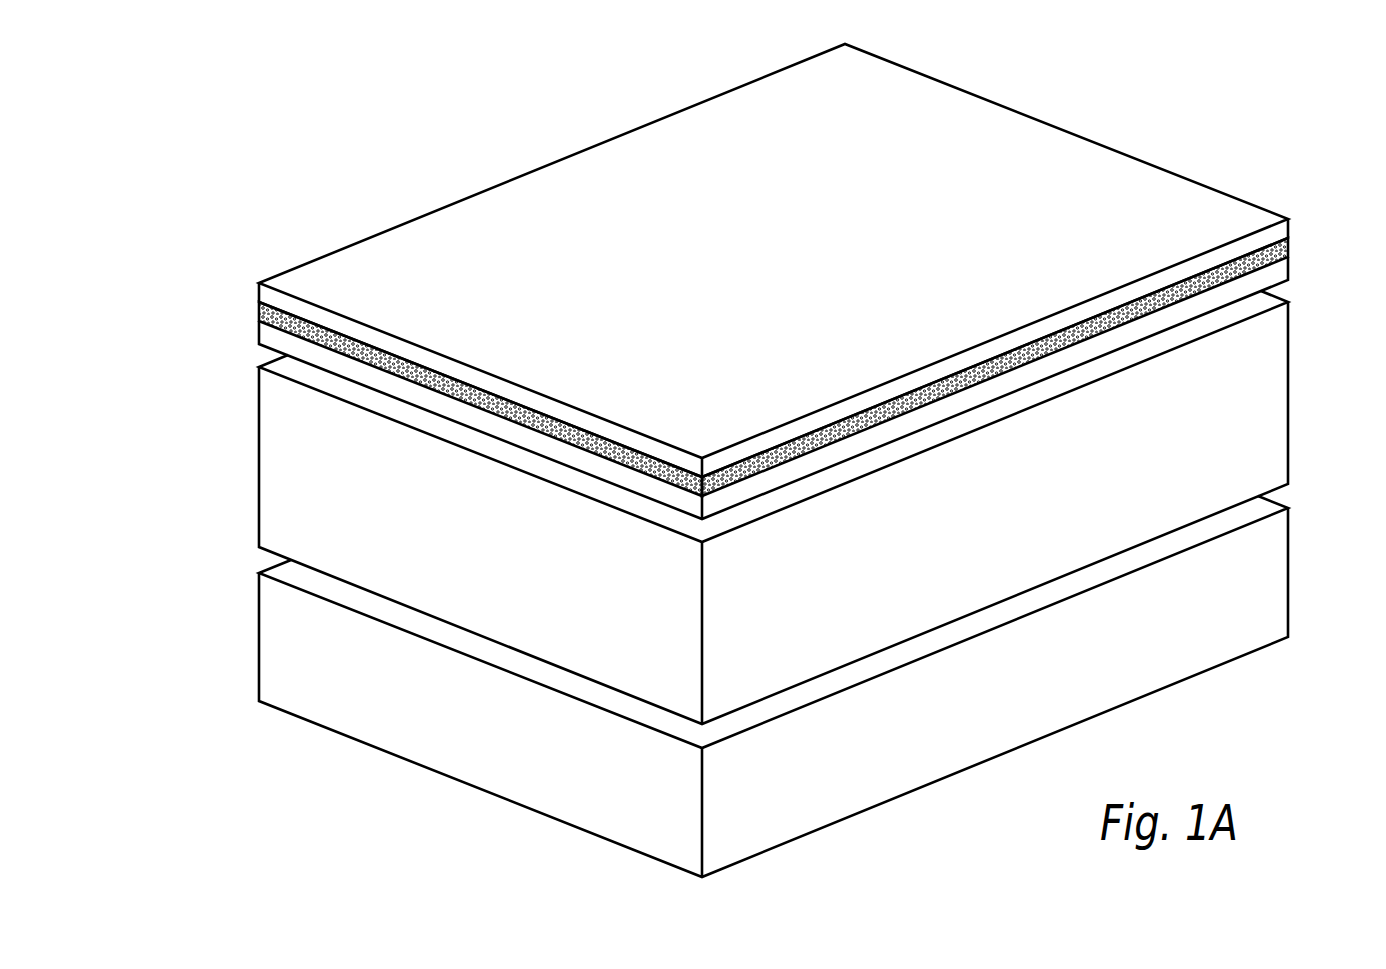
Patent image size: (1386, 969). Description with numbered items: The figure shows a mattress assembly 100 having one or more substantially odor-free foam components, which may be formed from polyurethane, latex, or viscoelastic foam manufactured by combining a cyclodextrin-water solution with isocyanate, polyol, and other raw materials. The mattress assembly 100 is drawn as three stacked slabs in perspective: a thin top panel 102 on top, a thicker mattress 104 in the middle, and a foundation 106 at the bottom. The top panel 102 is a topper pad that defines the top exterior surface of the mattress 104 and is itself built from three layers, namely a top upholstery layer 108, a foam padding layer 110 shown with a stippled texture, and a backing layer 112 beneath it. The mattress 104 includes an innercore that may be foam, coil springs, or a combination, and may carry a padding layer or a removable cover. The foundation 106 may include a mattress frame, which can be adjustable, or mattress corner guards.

The mattress assembly 100 is at (528, 113).
The top panel 102 is at (197, 257).
The mattress 104 is at (197, 340).
The foundation 106 is at (197, 673).
The top upholstery layer 108 is at (417, 238).
The foam padding layer 110 is at (1233, 260).
The backing layer 112 is at (1265, 273).